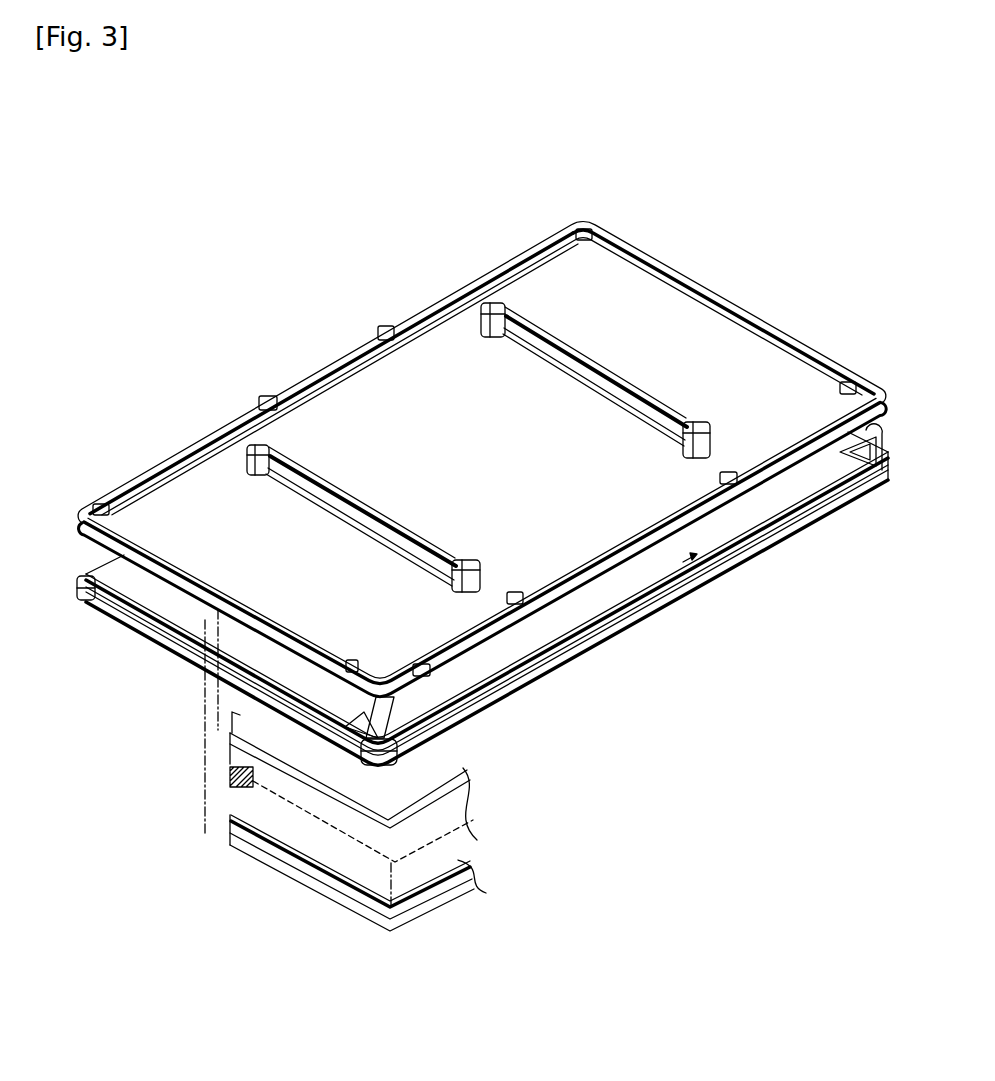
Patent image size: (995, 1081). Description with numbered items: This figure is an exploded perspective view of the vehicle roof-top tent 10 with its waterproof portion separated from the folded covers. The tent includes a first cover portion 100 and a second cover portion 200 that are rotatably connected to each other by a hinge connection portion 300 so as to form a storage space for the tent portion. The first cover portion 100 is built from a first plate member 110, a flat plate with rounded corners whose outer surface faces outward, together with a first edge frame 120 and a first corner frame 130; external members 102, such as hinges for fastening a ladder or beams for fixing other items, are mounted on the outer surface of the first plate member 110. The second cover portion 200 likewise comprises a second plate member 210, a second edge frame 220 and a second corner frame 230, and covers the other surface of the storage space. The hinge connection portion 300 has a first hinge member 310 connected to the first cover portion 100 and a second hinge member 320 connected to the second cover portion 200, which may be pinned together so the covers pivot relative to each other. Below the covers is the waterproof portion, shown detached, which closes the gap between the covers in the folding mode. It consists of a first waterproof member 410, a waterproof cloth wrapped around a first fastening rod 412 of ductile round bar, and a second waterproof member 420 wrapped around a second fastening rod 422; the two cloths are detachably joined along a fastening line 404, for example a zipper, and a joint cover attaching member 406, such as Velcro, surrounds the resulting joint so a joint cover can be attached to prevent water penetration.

The vehicle roof-top tent 10 is at (461, 233).
The first cover portion 100 is at (729, 337).
The external members 102 is at (262, 432).
The first plate member 110 is at (691, 302).
The first edge frame 120 is at (143, 470).
The first corner frame 130 is at (80, 533).
The second cover portion 200 is at (717, 574).
The second plate member 210 is at (778, 521).
The second edge frame 220 is at (90, 560).
The second corner frame 230 is at (78, 588).
The hinge connection portion 300 is at (573, 689).
The first hinge member 310 is at (400, 717).
The second hinge member 320 is at (400, 744).
The fastening line 404 is at (465, 828).
The joint cover attaching member 406 is at (230, 770).
The first waterproof member 410 is at (470, 798).
The first fastening rod 412 is at (232, 725).
The second waterproof member 420 is at (466, 848).
The second fastening rod 422 is at (231, 845).